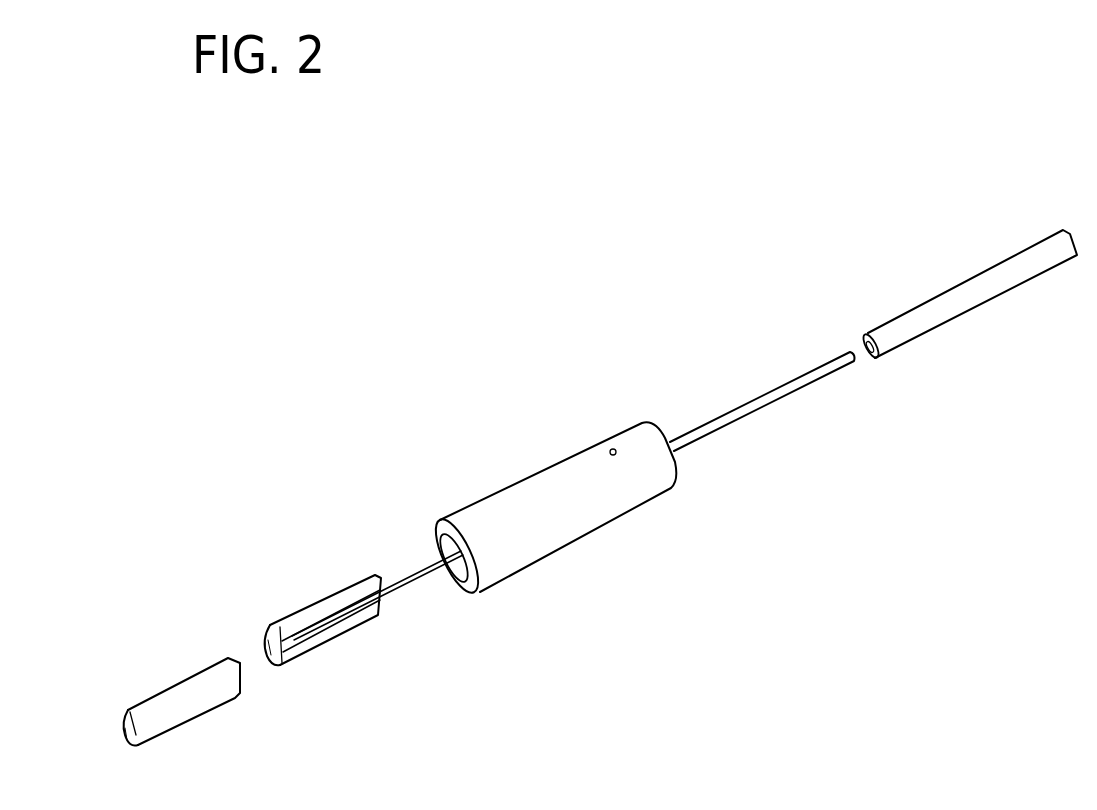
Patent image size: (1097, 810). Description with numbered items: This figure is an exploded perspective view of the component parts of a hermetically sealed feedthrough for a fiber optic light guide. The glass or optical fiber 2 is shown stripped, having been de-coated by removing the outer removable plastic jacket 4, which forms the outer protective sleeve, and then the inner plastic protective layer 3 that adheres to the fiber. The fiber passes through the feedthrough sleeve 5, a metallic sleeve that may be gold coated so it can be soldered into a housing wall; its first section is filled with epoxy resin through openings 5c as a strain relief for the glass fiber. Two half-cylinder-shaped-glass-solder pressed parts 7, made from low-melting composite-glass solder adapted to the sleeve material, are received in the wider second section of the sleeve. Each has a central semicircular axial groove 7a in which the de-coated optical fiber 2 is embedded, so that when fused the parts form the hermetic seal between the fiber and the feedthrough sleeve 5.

The optical fiber 2 is at (420, 573).
The inner plastic protective layer 3 is at (778, 393).
The outer removable plastic jacket 4 is at (1027, 273).
The feedthrough sleeve 5 is at (555, 508).
The openings 5c is at (611, 447).
The half-cylinder-shaped-glass-solder pressed part 7 is at (290, 620).
The central semicircular axial groove 7a is at (295, 645).